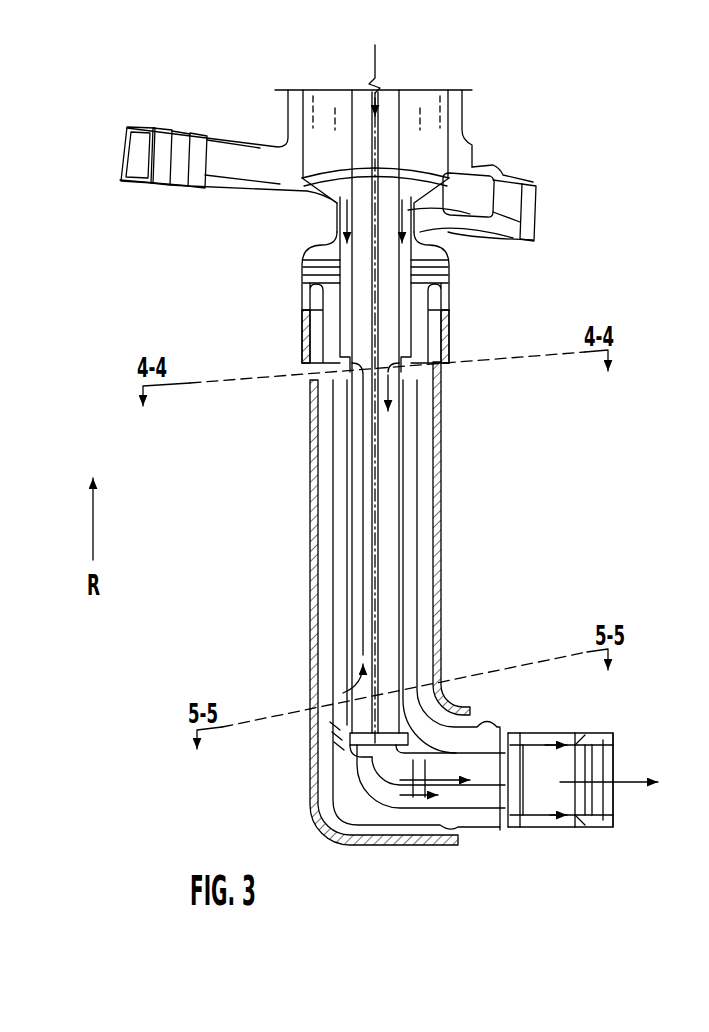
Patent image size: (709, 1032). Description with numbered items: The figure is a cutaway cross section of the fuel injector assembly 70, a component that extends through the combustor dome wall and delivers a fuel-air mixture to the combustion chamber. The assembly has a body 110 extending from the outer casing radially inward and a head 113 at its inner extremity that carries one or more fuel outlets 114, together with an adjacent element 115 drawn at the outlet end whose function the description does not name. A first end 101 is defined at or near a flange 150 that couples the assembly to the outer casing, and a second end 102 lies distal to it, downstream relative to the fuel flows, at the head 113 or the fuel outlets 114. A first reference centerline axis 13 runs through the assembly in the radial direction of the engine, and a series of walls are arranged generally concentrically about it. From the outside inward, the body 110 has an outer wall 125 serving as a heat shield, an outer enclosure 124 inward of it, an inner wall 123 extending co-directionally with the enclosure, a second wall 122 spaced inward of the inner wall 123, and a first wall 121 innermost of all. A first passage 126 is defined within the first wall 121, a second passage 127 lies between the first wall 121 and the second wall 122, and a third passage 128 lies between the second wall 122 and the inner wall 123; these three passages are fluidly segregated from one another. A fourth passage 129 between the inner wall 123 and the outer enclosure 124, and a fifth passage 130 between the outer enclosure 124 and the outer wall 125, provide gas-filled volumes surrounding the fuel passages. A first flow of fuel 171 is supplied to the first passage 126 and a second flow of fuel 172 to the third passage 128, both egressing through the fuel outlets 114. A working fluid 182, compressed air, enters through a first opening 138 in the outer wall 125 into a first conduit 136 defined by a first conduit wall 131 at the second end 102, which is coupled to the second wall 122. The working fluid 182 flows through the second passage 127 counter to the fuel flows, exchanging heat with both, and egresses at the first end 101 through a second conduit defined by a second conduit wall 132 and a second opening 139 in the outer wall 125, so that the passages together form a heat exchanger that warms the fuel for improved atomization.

The fuel injector assembly 70 is at (541, 97).
The first end 101 is at (289, 261).
The second end 102 is at (567, 631).
The first reference centerline axis 13 is at (375, 130).
The body 110 is at (425, 402).
The head 113 is at (385, 859).
The fuel outlet 114 is at (481, 709).
The outlet fitting nut 115 is at (535, 731).
The first wall 121 is at (380, 545).
The second wall 122 is at (403, 462).
The inner wall 123 is at (446, 490).
The outer enclosure 124 is at (421, 375).
The outer wall 125 is at (313, 572).
The first passage 126 is at (380, 592).
The second passage 127 is at (390, 432).
The third passage 128 is at (347, 607).
The fourth passage 129 is at (342, 643).
The fifth passage 130 is at (311, 718).
The first conduit wall 131 is at (317, 677).
The second conduit wall 132 is at (330, 362).
The first conduit 136 is at (307, 378).
The first opening 138 is at (299, 723).
The second opening 139 is at (289, 384).
The flange 150 is at (536, 203).
The first flow of fuel 171 is at (373, 65).
The second flow of fuel 172 is at (406, 205).
The working fluid 182 is at (357, 402).